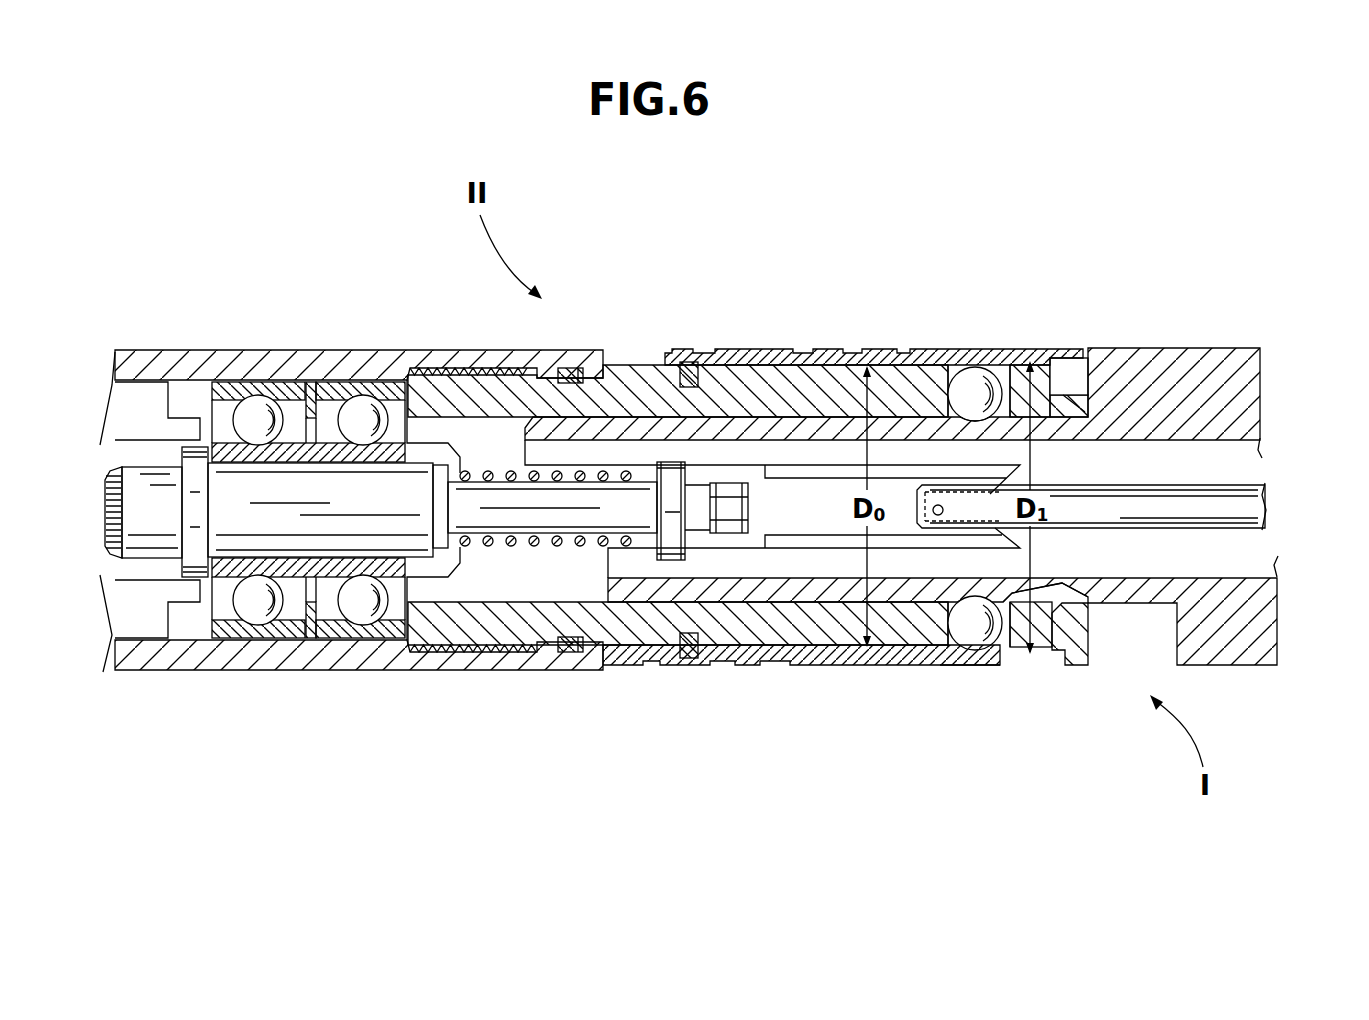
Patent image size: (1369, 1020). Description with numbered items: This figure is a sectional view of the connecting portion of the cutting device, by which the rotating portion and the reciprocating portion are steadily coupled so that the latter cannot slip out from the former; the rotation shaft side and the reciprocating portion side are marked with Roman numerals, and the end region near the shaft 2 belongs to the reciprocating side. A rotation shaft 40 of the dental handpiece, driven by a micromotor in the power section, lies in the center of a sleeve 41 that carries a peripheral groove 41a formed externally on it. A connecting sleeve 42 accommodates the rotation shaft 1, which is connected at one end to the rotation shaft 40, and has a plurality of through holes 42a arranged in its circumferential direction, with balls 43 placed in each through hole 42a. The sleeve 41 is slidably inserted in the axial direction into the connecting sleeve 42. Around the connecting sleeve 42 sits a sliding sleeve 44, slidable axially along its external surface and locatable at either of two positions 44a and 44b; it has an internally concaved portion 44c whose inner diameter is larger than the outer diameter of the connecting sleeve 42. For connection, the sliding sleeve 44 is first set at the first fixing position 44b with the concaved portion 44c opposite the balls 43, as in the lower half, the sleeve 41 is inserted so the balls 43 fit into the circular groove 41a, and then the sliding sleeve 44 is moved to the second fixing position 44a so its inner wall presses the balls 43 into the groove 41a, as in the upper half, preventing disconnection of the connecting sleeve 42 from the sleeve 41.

The rotation shaft 1 is at (812, 520).
The shaft 2 is at (105, 509).
The rotation shaft 40 is at (1262, 500).
The sleeve 41 is at (833, 418).
The peripheral groove 41a is at (977, 430).
The connecting sleeve 42 is at (902, 382).
The through holes 42a is at (955, 378).
The balls 43 is at (993, 352).
The sliding sleeve 44 is at (667, 350).
The second fixing position 44a is at (690, 352).
The first fixing position 44b is at (752, 352).
The internally concaved portion 44c is at (950, 661).